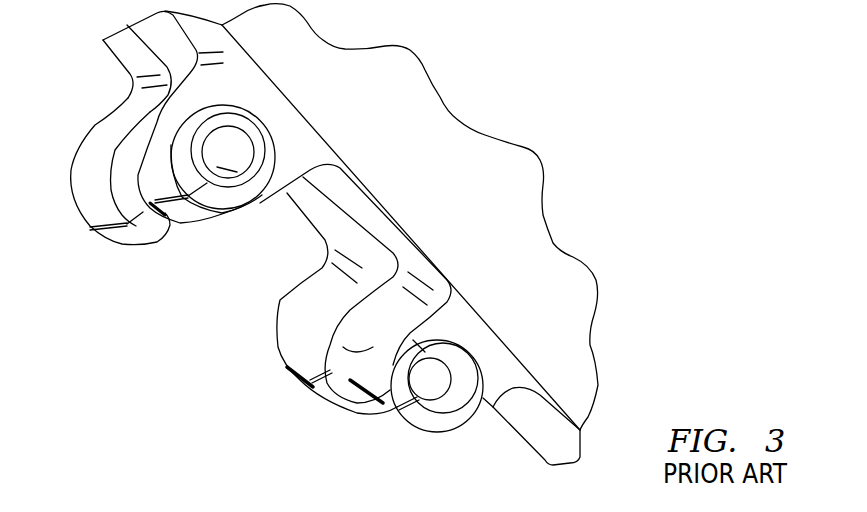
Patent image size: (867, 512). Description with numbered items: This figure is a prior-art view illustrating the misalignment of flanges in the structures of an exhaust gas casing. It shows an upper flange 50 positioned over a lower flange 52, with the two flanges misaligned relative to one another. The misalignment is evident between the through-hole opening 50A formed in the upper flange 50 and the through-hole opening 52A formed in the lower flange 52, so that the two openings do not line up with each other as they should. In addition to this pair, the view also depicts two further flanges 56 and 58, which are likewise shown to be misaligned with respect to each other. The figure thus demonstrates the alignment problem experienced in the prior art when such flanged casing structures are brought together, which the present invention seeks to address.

The upper flange 50 is at (167, 103).
The through-hole opening 50A is at (266, 240).
The lower flange 52 is at (97, 140).
The through-hole opening 52A is at (165, 243).
The flange 56 is at (293, 332).
The flange 58 is at (370, 353).